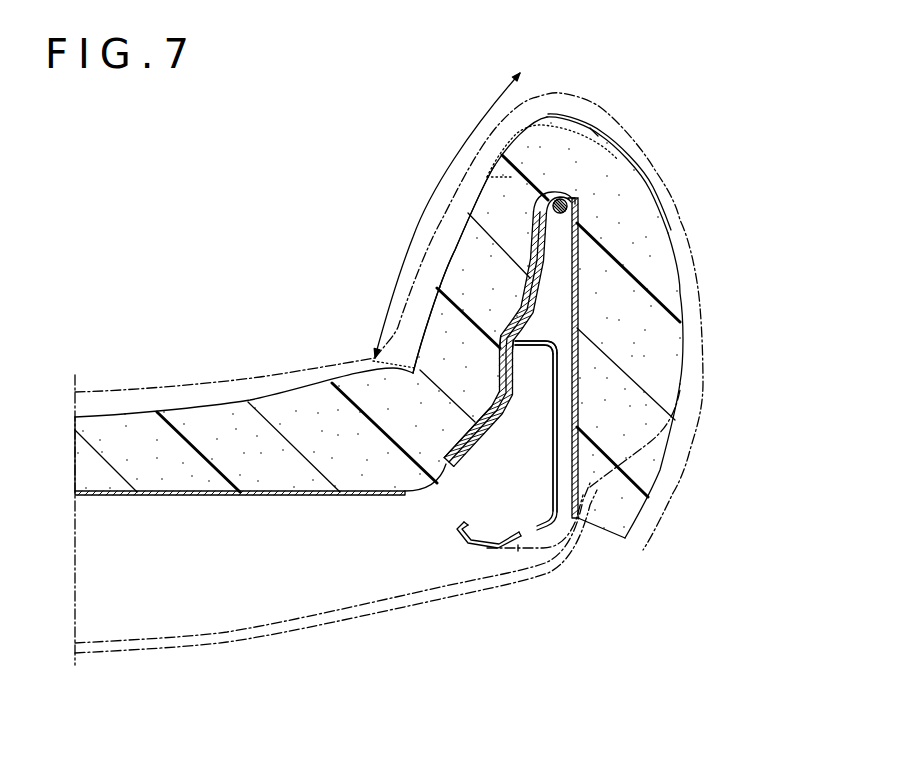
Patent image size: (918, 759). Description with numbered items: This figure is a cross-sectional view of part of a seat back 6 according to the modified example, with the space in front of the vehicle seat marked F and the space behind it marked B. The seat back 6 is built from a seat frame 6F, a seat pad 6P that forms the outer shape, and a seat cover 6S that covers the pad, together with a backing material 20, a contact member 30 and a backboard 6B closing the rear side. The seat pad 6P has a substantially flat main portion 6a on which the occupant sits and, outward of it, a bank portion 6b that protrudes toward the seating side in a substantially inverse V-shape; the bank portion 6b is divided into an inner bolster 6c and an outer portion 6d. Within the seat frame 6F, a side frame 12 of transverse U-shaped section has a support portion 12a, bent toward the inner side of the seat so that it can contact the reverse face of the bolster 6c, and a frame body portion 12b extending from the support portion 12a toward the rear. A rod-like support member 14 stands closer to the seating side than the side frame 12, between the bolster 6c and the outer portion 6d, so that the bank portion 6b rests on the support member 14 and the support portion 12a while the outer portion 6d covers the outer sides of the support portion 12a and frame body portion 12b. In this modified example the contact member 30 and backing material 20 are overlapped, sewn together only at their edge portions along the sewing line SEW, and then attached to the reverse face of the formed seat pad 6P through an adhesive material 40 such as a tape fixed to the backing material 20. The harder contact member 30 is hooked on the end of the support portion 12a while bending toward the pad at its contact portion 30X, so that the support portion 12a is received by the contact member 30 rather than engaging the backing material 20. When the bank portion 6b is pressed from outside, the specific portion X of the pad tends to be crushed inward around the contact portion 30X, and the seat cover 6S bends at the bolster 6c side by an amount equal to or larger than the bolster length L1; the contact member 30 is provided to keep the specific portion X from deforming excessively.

The seat back 6 is at (713, 167).
The main portion 6a is at (203, 404).
The bank portion 6b is at (607, 175).
The bolster 6c is at (468, 200).
The outer portion 6d is at (668, 233).
The seat cover 6S is at (700, 257).
The seat pad 6P is at (663, 285).
The seat frame 6F is at (520, 523).
The backboard 6B is at (467, 598).
The side frame 12 is at (540, 481).
The support portion 12a is at (537, 355).
The frame body portion 12b is at (553, 437).
The support member 14 is at (567, 202).
The backing material 20 is at (185, 497).
The contact member 30 is at (472, 457).
The contact portion 30X is at (518, 339).
The adhesive material 40 is at (460, 438).
The sewing line SEW is at (595, 142).
The specific portion X is at (485, 173).
The length of the bolster L1 is at (447, 215).
The space in front of the vehicle seat F is at (311, 82).
The space behind the vehicle seat B is at (315, 662).